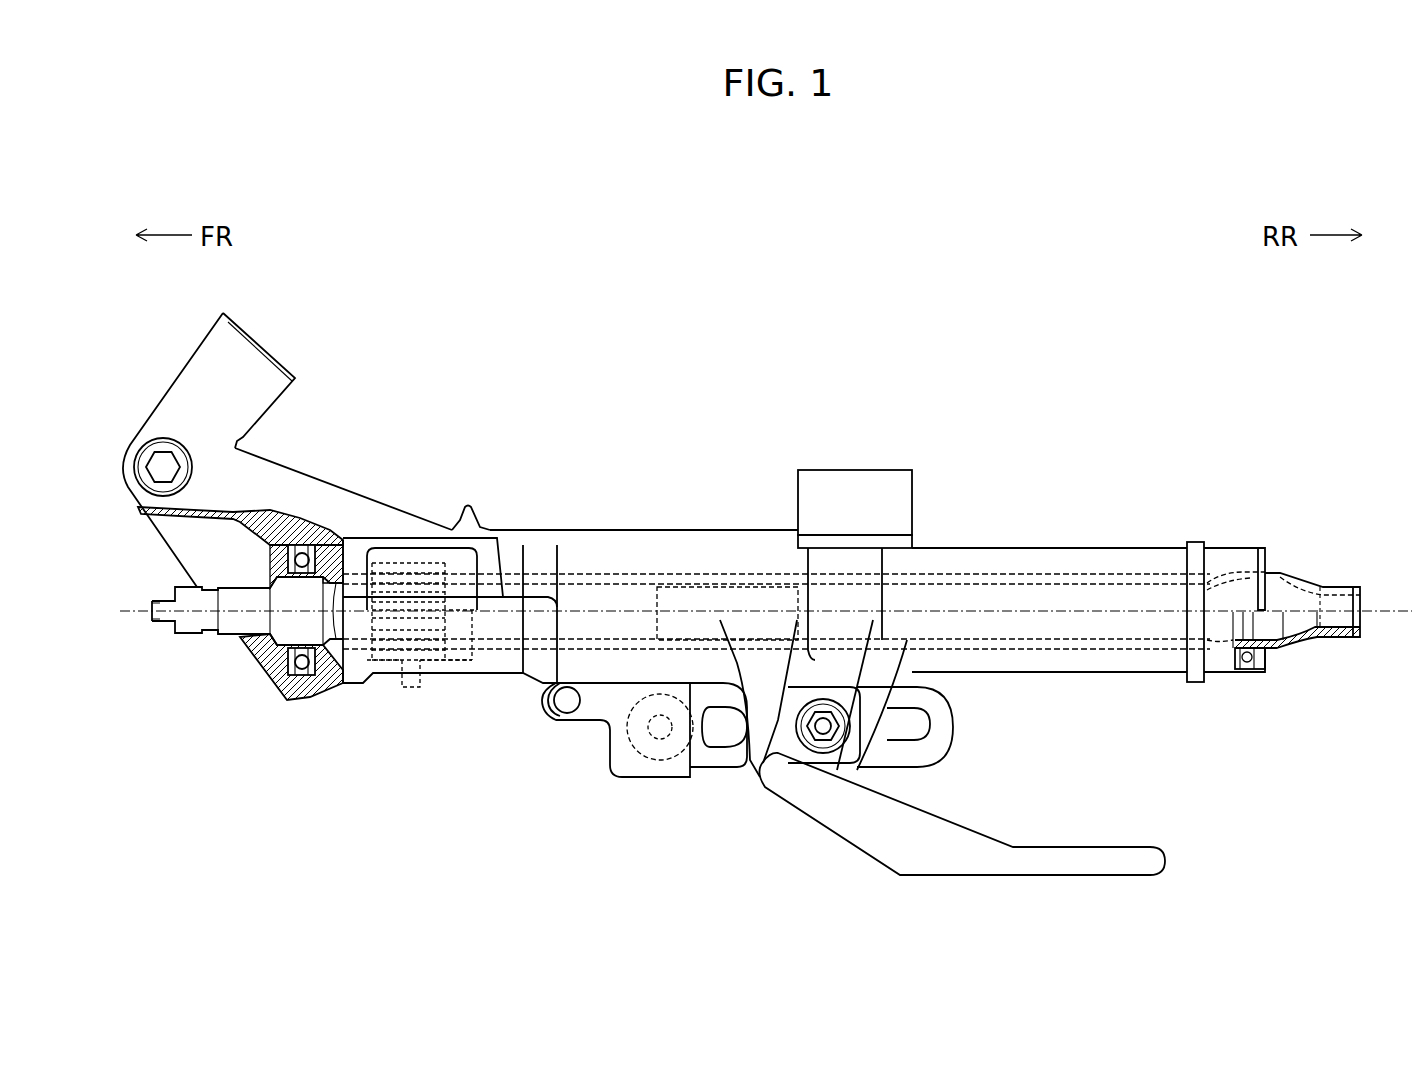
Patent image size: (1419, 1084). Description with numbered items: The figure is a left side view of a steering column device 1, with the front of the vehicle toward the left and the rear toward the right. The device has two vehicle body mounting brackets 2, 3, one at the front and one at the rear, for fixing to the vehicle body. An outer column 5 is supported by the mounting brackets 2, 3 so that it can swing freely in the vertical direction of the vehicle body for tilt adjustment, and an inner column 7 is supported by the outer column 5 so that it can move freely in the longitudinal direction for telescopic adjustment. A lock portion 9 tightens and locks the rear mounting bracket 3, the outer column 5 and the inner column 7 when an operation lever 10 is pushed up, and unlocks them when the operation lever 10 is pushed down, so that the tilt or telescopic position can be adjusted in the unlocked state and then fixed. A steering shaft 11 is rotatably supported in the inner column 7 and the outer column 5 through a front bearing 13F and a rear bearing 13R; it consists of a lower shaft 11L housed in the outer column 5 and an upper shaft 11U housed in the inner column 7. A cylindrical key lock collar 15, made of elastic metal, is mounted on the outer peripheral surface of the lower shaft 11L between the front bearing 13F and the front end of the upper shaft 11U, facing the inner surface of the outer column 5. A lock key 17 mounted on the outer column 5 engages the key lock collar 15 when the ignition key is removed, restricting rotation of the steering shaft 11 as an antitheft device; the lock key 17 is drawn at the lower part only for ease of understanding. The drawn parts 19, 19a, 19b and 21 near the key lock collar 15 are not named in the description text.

The steering column device 1 is at (1000, 428).
The vehicle body mounting bracket 2 is at (250, 363).
The vehicle body mounting bracket 3 is at (864, 480).
The outer column 5 is at (608, 530).
The inner column 7 is at (1073, 553).
The lock portion 9 is at (752, 776).
The operation lever 10 is at (1048, 863).
The steering shaft 11 is at (156, 611).
The lower shaft 11L is at (206, 640).
The upper shaft 11U is at (1302, 645).
The front bearing 13F is at (296, 690).
The rear bearing 13R is at (1243, 680).
The key lock collar 15 is at (490, 448).
The lock key 17 is at (413, 687).
The lock body 19 is at (408, 545).
The lock body front part 19a is at (373, 680).
The lock body rear part 19b is at (445, 680).
The protrusion 21 is at (468, 520).